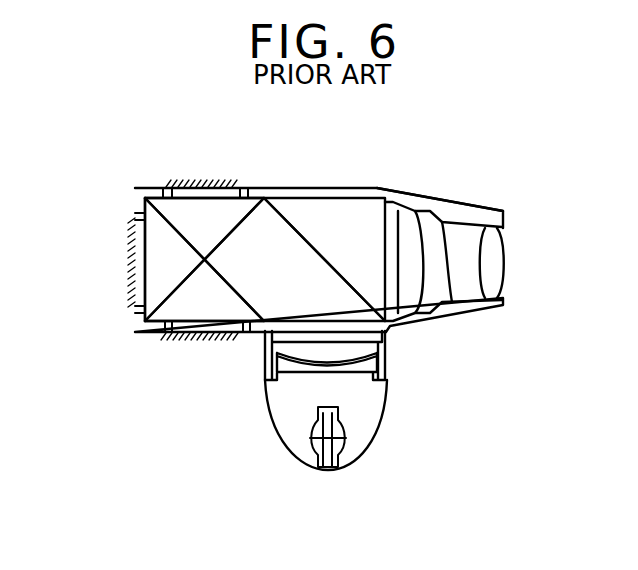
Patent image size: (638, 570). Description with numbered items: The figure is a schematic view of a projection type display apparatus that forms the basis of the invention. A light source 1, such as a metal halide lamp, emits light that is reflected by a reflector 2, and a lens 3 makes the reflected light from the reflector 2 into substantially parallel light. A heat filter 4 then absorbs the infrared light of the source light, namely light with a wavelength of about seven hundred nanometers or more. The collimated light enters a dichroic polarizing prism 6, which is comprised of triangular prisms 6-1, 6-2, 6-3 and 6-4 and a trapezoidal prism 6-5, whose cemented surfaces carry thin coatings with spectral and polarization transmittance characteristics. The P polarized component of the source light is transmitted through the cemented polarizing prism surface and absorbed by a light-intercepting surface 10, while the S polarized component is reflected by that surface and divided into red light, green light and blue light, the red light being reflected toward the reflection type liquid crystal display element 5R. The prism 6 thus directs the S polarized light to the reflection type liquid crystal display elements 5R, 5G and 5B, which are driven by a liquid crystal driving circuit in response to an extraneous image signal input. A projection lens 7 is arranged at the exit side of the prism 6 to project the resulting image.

The light source 1 is at (342, 440).
The reflector 2 is at (272, 418).
The lens 3 is at (265, 380).
The heat filter 4 is at (390, 342).
The reflection type liquid crystal display element 5R is at (203, 183).
The reflection type liquid crystal display element 5G is at (132, 273).
The reflection type liquid crystal display element 5B is at (174, 340).
The dichroic polarizing prism 6 is at (362, 170).
The triangular prism 6-1 is at (184, 208).
The triangular prism 6-2 is at (160, 243).
The triangular prism 6-3 is at (204, 310).
The triangular prism 6-4 is at (377, 201).
The trapezoidal prism 6-5 is at (258, 227).
The projection lens 7 is at (440, 226).
The light-intercepting surface 10 is at (318, 204).